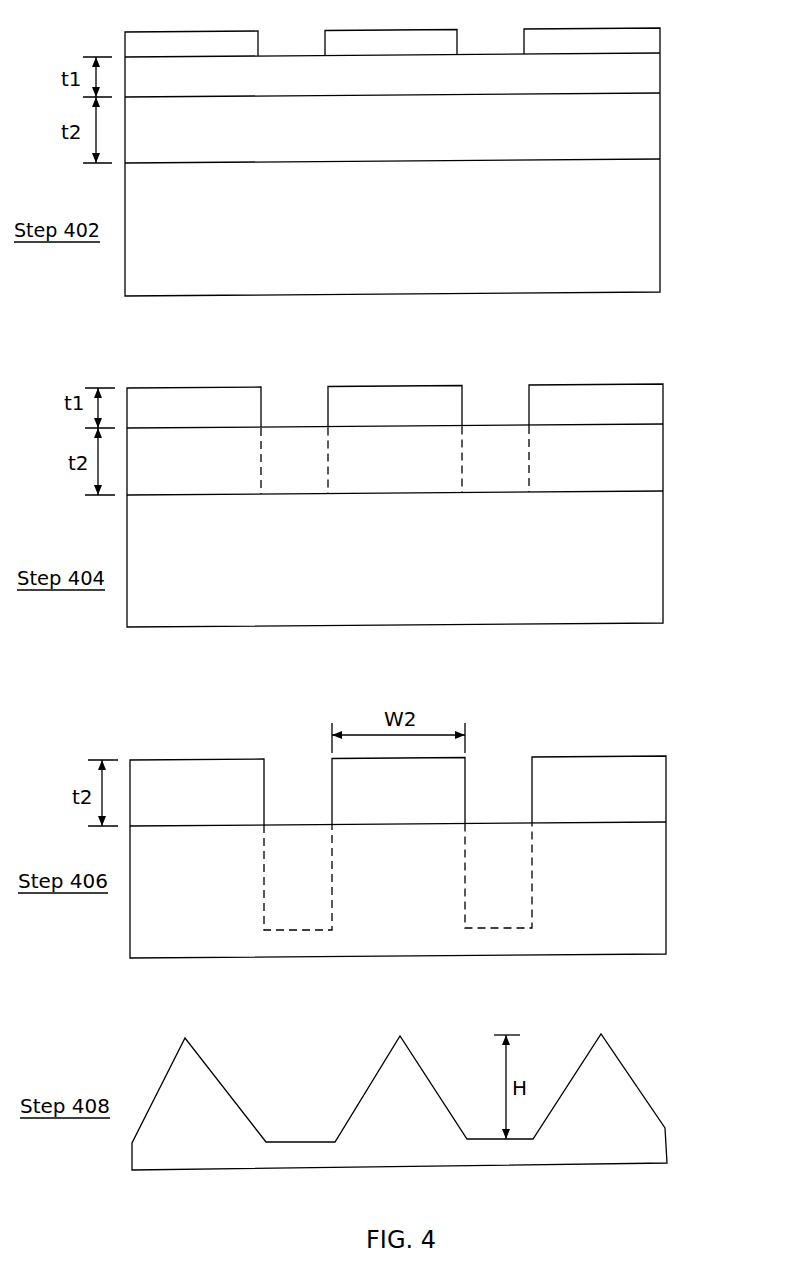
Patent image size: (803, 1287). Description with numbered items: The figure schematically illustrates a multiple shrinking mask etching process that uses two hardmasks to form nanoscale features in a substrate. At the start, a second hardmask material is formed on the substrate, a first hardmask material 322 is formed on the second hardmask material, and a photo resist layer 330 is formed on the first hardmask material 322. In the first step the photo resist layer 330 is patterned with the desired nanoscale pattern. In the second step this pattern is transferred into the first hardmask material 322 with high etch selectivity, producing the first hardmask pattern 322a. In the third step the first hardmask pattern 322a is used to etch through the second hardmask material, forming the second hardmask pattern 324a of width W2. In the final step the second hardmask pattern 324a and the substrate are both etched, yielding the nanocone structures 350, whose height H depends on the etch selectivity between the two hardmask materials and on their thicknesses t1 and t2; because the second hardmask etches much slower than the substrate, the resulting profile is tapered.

The first hardmask material 322 is at (652, 80).
The first hardmask pattern 322a is at (655, 410).
The second hardmask pattern 324a is at (658, 782).
The photo resist layer 330 is at (645, 40).
The nanocone structures 350 is at (618, 1087).